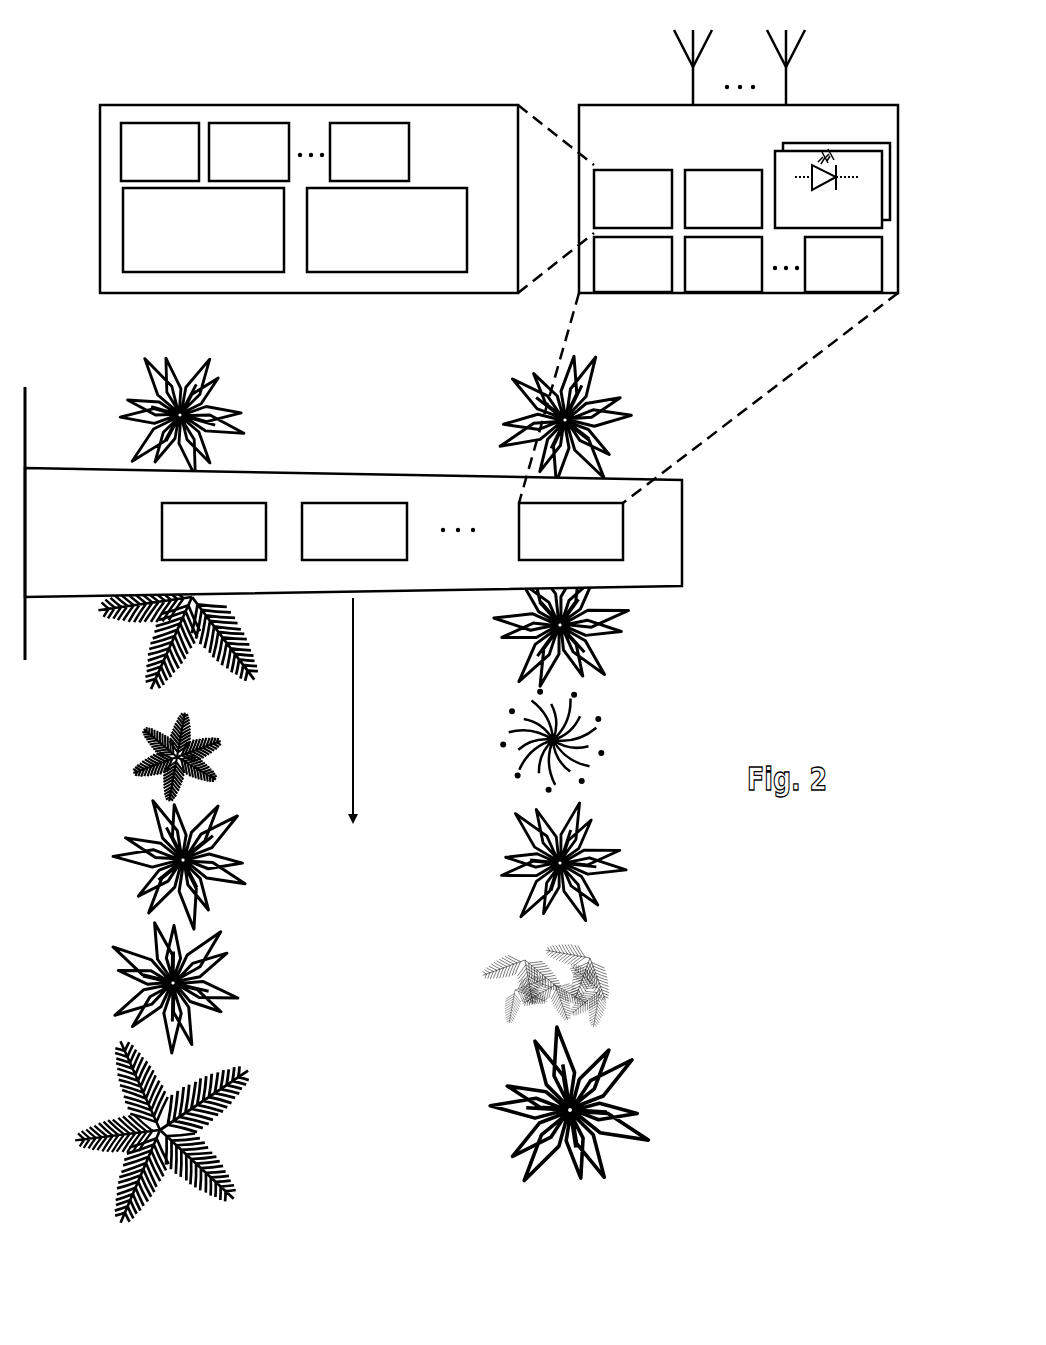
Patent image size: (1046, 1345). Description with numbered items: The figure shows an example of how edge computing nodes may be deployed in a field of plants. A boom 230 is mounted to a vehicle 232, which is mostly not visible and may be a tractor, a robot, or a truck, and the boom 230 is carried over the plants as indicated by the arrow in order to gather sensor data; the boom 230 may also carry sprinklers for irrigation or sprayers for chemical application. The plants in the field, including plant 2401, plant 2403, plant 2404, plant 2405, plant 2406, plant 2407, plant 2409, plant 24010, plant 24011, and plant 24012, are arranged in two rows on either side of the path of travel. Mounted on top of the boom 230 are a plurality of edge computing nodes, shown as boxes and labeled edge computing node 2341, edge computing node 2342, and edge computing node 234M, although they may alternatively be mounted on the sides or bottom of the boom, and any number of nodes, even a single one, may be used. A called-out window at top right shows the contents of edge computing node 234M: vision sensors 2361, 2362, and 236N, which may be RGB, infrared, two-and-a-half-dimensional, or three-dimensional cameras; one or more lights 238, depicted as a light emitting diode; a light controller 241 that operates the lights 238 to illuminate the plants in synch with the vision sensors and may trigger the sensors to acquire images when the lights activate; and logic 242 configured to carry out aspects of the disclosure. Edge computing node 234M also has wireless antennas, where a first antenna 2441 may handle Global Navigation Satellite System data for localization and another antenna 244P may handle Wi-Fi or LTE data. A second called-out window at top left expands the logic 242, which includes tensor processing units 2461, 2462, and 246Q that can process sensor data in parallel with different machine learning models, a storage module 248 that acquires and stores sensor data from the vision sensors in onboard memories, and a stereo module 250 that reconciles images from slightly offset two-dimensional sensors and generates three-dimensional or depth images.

The boom 230 is at (682, 530).
The vehicle 232 is at (25, 428).
The edge computing node 2341 is at (214, 531).
The edge computing node 2342 is at (354, 531).
The edge computing node 234M is at (708, 295).
The vision sensor 2361 is at (633, 264).
The vision sensor 2362 is at (723, 264).
The vision sensor 236N is at (843, 264).
The light 238 is at (832, 185).
The light controller 241 is at (723, 199).
The logic 242 is at (386, 163).
The wireless antenna 2441 is at (693, 88).
The wireless antenna 244P is at (822, 76).
The tensor processing unit 2461 is at (160, 152).
The tensor processing unit 2462 is at (249, 152).
The tensor processing unit 246Q is at (369, 152).
The storage module 248 is at (203, 230).
The stereo module 250 is at (387, 230).
The plant 2401 is at (118, 388).
The plant 2403 is at (121, 720).
The plant 2404 is at (122, 820).
The plant 2405 is at (80, 968).
The plant 2406 is at (82, 1098).
The plant 2407 is at (458, 412).
The plant 2409 is at (463, 745).
The plant 24010 is at (462, 850).
The plant 24011 is at (458, 946).
The plant 24012 is at (455, 1073).